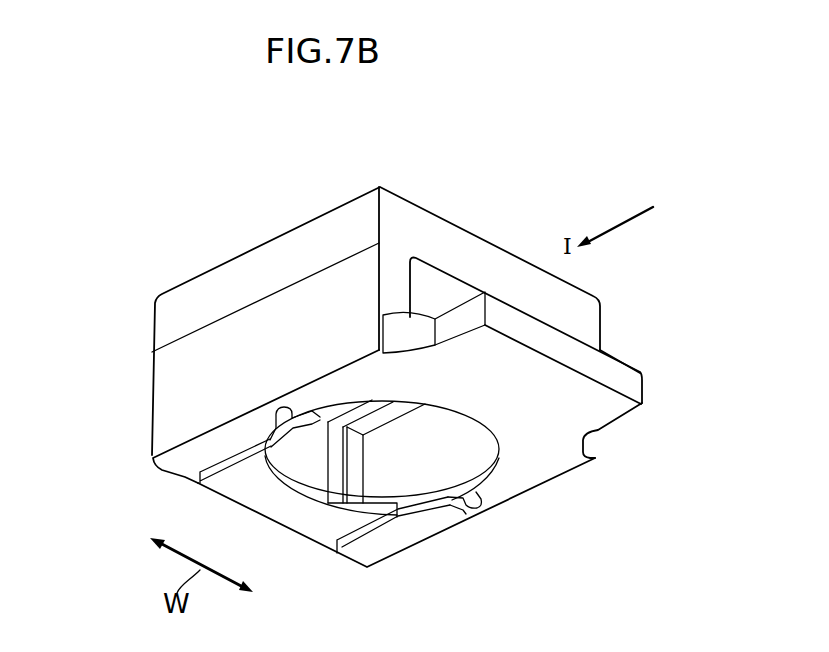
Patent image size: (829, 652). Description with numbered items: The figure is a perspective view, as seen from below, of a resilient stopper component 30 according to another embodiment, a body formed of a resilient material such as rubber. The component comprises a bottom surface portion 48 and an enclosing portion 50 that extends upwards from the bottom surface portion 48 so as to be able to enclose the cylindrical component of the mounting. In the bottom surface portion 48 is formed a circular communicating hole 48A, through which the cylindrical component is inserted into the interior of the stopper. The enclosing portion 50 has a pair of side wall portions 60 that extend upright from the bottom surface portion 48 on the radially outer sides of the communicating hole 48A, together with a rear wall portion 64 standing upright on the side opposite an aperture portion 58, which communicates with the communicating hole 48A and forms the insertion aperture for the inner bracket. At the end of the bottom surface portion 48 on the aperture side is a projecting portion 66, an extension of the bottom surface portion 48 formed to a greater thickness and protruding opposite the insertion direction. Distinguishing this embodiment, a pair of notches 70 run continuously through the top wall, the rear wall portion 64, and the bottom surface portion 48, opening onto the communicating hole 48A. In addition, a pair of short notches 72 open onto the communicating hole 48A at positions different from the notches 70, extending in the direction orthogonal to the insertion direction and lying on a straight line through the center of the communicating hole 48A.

The resilient stopper component 30 is at (222, 182).
The enclosing portion 50 is at (310, 215).
The aperture portion 58 is at (428, 288).
The side wall portions 60 is at (247, 330).
The bottom surface portion 48 is at (534, 476).
The communicating hole 48A is at (460, 428).
The projecting portion 66 is at (628, 418).
The rear wall portion 64 is at (302, 467).
The notches 70 is at (193, 480).
The short notches 72 is at (276, 421).